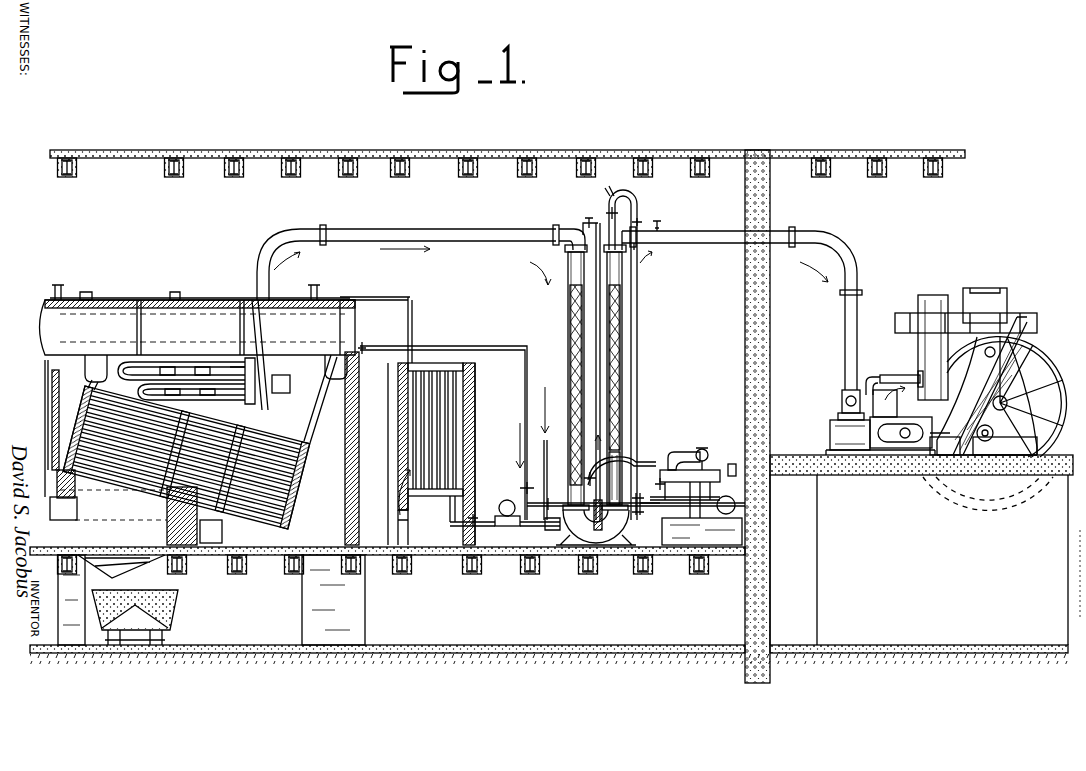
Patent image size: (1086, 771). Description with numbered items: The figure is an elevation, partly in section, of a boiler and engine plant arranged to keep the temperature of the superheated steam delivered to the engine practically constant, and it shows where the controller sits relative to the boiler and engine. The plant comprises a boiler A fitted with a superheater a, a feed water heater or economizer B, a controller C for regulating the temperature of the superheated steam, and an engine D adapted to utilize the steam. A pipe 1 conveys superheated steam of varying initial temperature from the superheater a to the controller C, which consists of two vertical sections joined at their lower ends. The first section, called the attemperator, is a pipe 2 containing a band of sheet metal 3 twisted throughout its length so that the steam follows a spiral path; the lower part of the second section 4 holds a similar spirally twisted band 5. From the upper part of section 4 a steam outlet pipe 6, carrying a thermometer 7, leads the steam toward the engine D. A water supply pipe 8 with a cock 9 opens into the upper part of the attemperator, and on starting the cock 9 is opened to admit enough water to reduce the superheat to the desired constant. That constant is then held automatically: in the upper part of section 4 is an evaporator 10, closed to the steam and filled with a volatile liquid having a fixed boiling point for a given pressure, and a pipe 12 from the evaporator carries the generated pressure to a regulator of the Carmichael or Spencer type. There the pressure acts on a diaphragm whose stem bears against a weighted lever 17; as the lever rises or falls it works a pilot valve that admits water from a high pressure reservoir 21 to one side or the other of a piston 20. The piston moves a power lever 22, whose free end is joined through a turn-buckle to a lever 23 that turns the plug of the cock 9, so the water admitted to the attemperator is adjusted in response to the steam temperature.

The pipe 1 is at (462, 233).
The pipe 2 is at (568, 303).
The band of sheet metal 3 is at (568, 351).
The second section 4 is at (622, 446).
The spirally twisted band 5 is at (622, 385).
The steam outlet pipe 6 is at (742, 308).
The thermometer 7 is at (660, 232).
The water supply pipe 8 is at (572, 230).
The cock 9 is at (597, 465).
The evaporator 10 is at (622, 320).
The pipe 12 is at (632, 210).
The lever 17 is at (681, 458).
The piston 20 is at (706, 471).
The high pressure reservoir 21 is at (724, 510).
The power lever 22 is at (696, 503).
The lever 23 is at (632, 460).
The boiler A is at (200, 403).
The feed water heater or economizer B is at (455, 416).
The controller C is at (596, 363).
The engine D is at (921, 449).
The superheater a is at (160, 384).